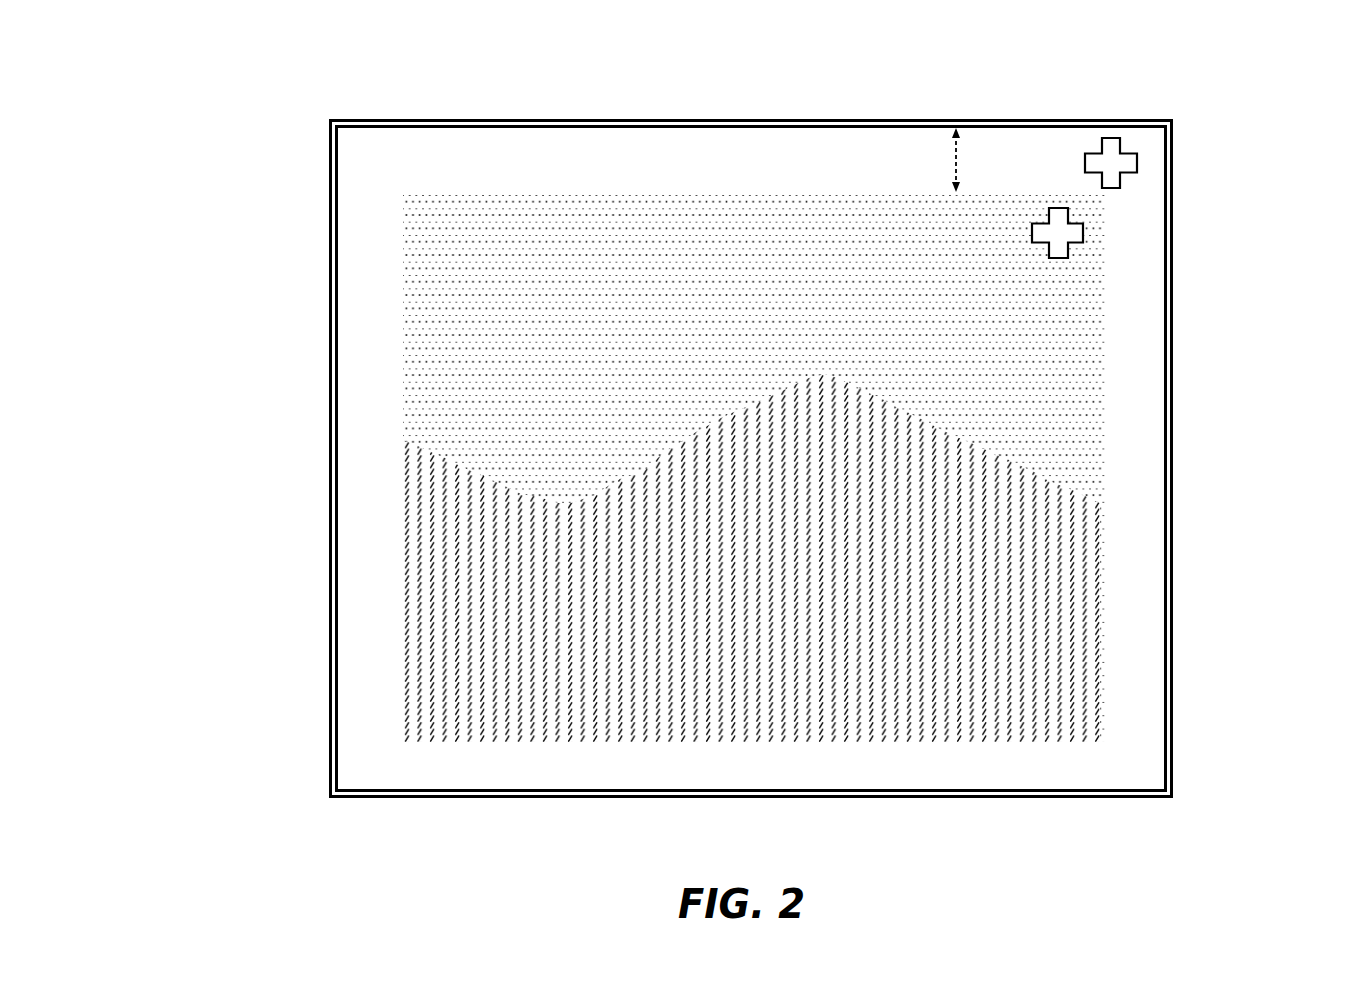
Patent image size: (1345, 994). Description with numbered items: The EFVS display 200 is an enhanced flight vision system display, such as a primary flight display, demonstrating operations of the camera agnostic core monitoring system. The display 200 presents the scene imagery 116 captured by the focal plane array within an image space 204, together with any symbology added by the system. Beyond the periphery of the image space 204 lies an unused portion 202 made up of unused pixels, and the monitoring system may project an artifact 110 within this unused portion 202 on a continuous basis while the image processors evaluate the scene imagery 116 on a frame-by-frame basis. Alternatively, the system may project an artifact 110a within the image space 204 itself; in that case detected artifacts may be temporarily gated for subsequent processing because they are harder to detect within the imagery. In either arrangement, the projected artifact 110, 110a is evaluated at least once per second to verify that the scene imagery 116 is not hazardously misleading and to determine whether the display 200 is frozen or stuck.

The display screen with graphical user interface 200 is at (219, 160).
The artifact 110 is at (1130, 152).
The artifact 110a is at (1072, 235).
The scene imagery 116 is at (399, 402).
The unused portion 202 is at (955, 168).
The image space 204 is at (1103, 498).